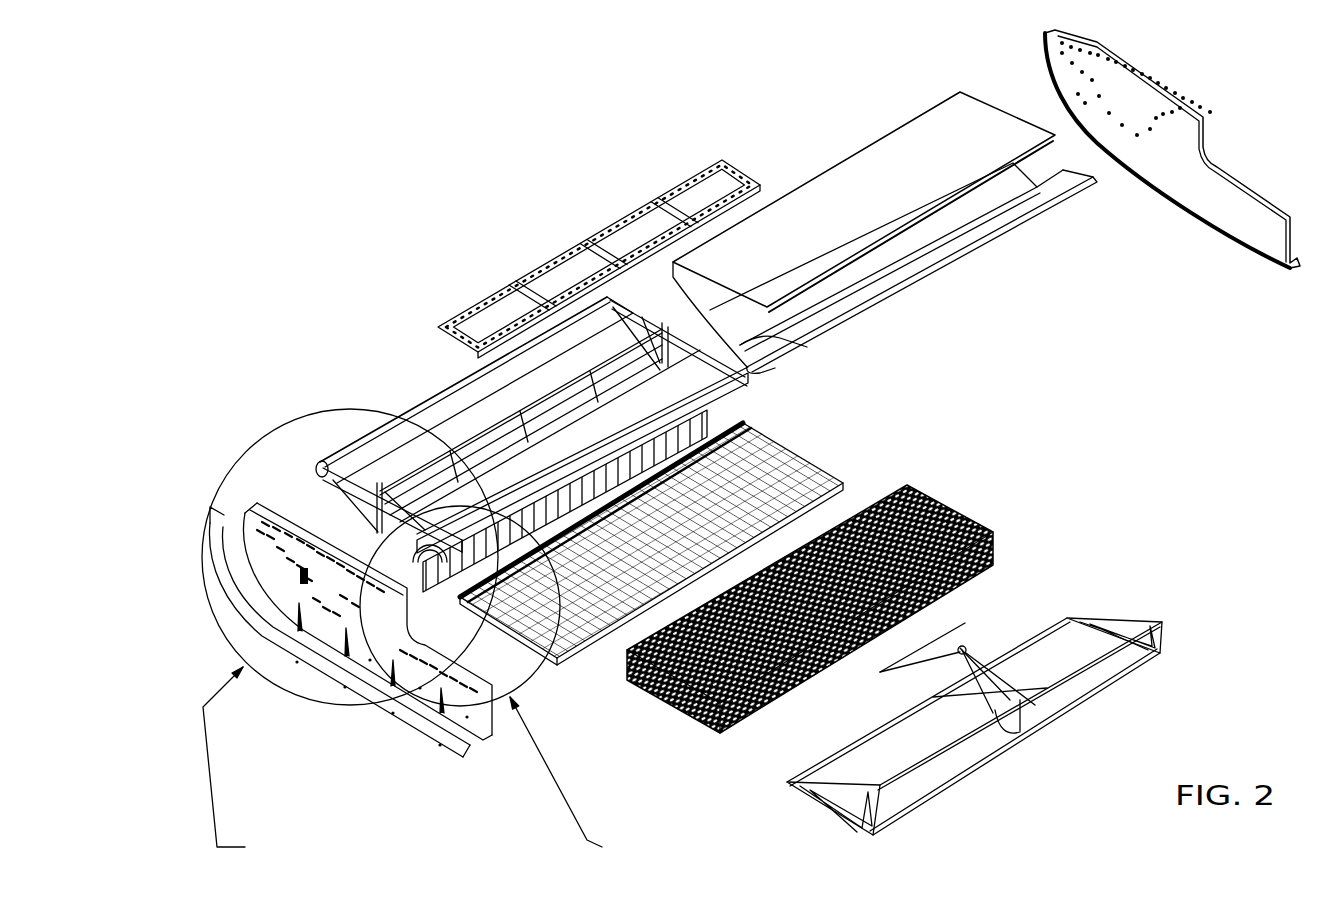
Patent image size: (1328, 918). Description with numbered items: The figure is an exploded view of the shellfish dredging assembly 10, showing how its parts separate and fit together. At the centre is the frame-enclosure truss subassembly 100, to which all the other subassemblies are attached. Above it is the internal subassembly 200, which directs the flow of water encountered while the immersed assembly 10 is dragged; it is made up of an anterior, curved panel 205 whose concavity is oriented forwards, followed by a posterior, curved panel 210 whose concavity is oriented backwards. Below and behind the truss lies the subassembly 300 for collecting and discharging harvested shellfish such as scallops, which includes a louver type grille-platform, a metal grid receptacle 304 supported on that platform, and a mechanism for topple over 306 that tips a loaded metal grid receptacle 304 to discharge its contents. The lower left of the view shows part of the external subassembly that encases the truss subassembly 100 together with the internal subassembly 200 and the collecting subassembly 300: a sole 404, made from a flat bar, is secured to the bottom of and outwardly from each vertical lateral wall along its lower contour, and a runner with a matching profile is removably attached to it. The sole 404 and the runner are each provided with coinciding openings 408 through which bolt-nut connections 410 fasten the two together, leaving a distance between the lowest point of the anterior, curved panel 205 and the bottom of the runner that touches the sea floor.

The assembly 10 is at (737, 447).
The frame-enclosure truss subassembly 100 is at (461, 444).
The internal subassembly 200 is at (953, 260).
The anterior, curved panel 205 is at (987, 269).
The posterior, curved panel 210 is at (948, 271).
The subassembly for collecting and discharging harvested shellfish 300 is at (789, 544).
The metal grid receptacle 304 is at (797, 632).
The mechanism for topple over 306 is at (1022, 678).
The sole 404 is at (350, 656).
The coinciding openings 408 is at (339, 632).
The bolt-nut connections 410 is at (365, 691).